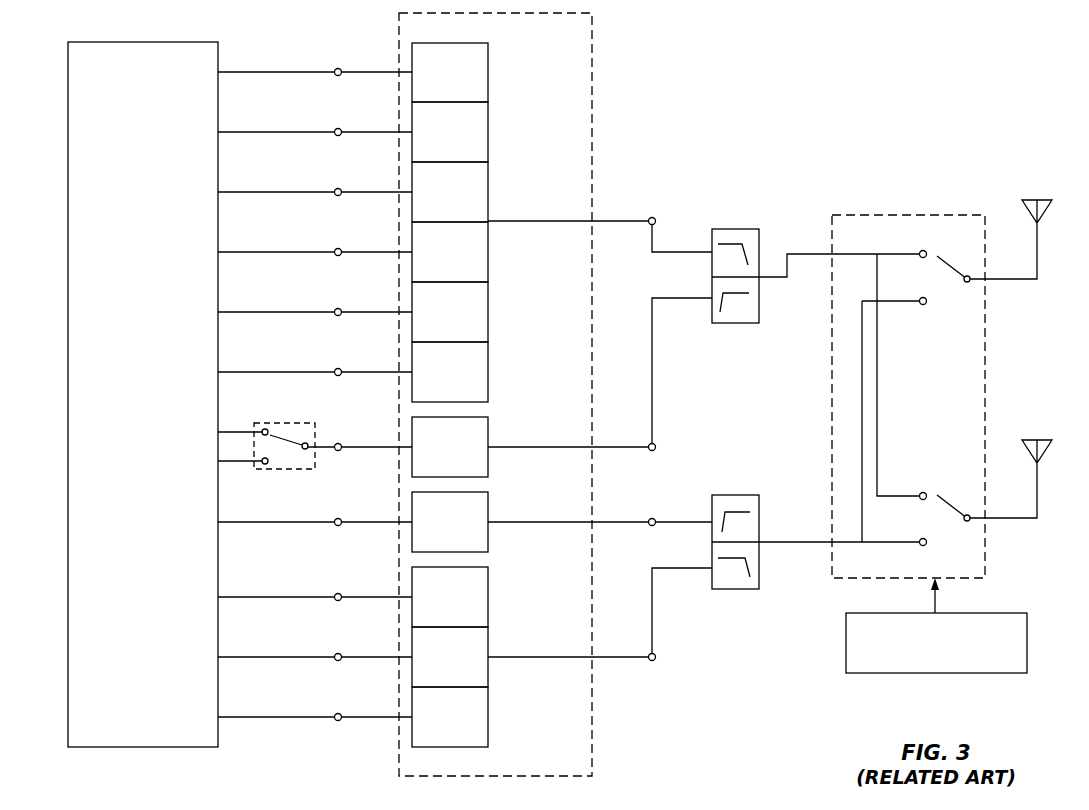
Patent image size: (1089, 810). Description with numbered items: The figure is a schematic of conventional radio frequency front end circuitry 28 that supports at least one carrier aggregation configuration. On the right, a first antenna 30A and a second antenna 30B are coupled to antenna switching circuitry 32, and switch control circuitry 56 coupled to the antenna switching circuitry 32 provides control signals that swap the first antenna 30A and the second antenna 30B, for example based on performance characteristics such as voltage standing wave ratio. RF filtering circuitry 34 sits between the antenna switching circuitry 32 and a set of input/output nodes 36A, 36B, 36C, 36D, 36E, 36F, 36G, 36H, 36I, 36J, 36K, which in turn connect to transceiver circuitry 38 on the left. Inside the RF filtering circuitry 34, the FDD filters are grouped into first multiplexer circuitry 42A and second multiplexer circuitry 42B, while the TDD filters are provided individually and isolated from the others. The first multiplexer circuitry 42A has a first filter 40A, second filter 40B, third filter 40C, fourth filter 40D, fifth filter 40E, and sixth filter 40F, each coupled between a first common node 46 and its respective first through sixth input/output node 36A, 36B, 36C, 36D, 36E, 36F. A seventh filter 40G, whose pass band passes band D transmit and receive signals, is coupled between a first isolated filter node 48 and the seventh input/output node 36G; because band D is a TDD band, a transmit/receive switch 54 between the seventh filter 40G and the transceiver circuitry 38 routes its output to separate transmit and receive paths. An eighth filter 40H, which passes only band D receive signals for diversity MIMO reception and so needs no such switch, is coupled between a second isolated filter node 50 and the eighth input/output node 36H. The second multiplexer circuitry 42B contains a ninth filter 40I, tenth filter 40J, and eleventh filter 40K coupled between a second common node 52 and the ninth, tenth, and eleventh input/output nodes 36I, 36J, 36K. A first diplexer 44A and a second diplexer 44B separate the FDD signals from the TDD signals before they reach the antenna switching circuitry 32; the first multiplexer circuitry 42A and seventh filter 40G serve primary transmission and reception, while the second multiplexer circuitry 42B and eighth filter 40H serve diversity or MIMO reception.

The RF front end circuitry 28 is at (940, 82).
The first antenna 30A is at (1040, 199).
The second antenna 30B is at (1040, 439).
The antenna switching circuitry 32 is at (985, 565).
The RF filtering circuitry 34 is at (592, 57).
The first input/output node 36A is at (340, 67).
The second input/output node 36B is at (340, 127).
The third input/output node 36C is at (340, 187).
The fourth input/output node 36D is at (340, 247).
The fifth input/output node 36E is at (340, 307).
The sixth input/output node 36F is at (340, 367).
The seventh input/output node 36G is at (340, 442).
The eighth input/output node 36H is at (340, 517).
The ninth input/output node 36I is at (340, 592).
The tenth input/output node 36J is at (340, 652).
The eleventh input/output node 36K is at (340, 712).
The transceiver circuitry 38 is at (134, 421).
The first filter 40A is at (488, 70).
The second filter 40B is at (488, 129).
The third filter 40C is at (488, 189).
The fourth filter 40D is at (488, 249).
The fifth filter 40E is at (488, 309).
The sixth filter 40F is at (488, 367).
The seventh filter 40G is at (488, 439).
The eighth filter 40H is at (488, 512).
The ninth filter 40I is at (488, 588).
The tenth filter 40J is at (488, 649).
The eleventh filter 40K is at (488, 708).
The first multiplexer circuitry 42A is at (513, 39).
The second multiplexer circuitry 42B is at (513, 744).
The first diplexer 44A is at (733, 229).
The second diplexer 44B is at (733, 495).
The first common node 46 is at (655, 217).
The first isolated filter node 48 is at (689, 471).
The second isolated filter node 50 is at (655, 518).
The second common node 52 is at (655, 661).
The transmit/receive switch 54 is at (294, 469).
The switch control circuitry 56 is at (928, 663).